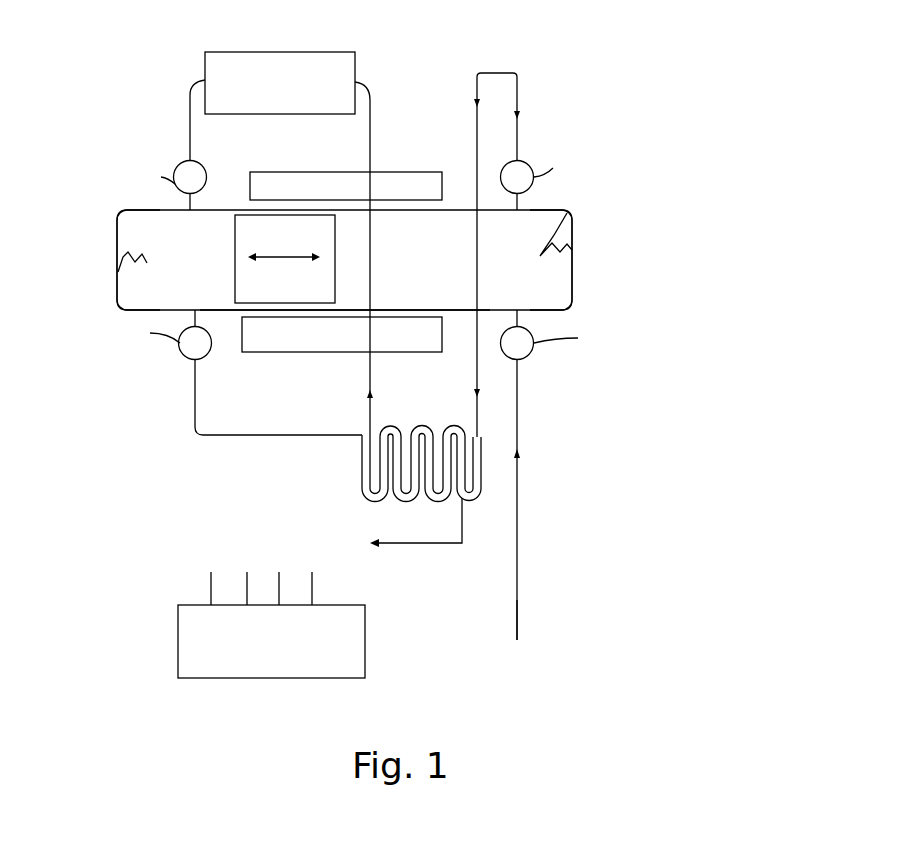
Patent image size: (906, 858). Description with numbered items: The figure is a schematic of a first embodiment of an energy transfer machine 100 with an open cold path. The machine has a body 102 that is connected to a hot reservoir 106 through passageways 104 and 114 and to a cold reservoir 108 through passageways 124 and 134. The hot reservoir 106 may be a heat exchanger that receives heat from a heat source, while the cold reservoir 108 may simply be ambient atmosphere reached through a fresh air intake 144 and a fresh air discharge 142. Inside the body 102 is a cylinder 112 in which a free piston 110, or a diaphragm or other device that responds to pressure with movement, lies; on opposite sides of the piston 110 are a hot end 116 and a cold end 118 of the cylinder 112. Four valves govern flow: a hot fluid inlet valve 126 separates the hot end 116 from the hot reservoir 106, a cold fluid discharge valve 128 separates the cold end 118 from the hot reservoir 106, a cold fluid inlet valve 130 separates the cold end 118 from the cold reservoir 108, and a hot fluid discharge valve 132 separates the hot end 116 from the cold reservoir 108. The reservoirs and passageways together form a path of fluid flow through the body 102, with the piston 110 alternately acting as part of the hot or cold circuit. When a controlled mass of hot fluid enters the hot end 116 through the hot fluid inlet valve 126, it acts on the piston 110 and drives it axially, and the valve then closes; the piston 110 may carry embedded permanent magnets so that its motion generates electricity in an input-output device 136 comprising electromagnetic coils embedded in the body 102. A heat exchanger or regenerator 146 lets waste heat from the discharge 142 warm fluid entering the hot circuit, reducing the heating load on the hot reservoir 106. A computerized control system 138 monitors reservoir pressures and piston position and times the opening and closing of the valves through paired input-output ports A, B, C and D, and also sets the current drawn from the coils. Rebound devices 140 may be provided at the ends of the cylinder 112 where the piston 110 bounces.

The energy transfer machine 100 is at (628, 160).
The body 102 is at (572, 232).
The passageway 104 is at (495, 73).
The hot reservoir 106 is at (355, 62).
The cold reservoir 108 is at (452, 619).
The piston 110 is at (242, 213).
The cylinder 112 is at (572, 298).
The passageway 114 is at (188, 93).
The hot end 116 is at (133, 218).
The cold end 118 is at (562, 277).
The passageway 124 is at (520, 502).
The hot fluid inlet valve 126 is at (182, 158).
The cold fluid discharge valve 128 is at (527, 165).
The cold fluid inlet valve 130 is at (525, 352).
The hot fluid discharge valve 132 is at (185, 356).
The passageway 134 is at (215, 437).
The input-output device 136 is at (382, 172).
The computerized control system 138 is at (178, 640).
The rebound devices 140 is at (122, 264).
The fresh air discharge 142 is at (382, 546).
The fresh air intake 144 is at (518, 634).
The regenerator 146 is at (362, 481).